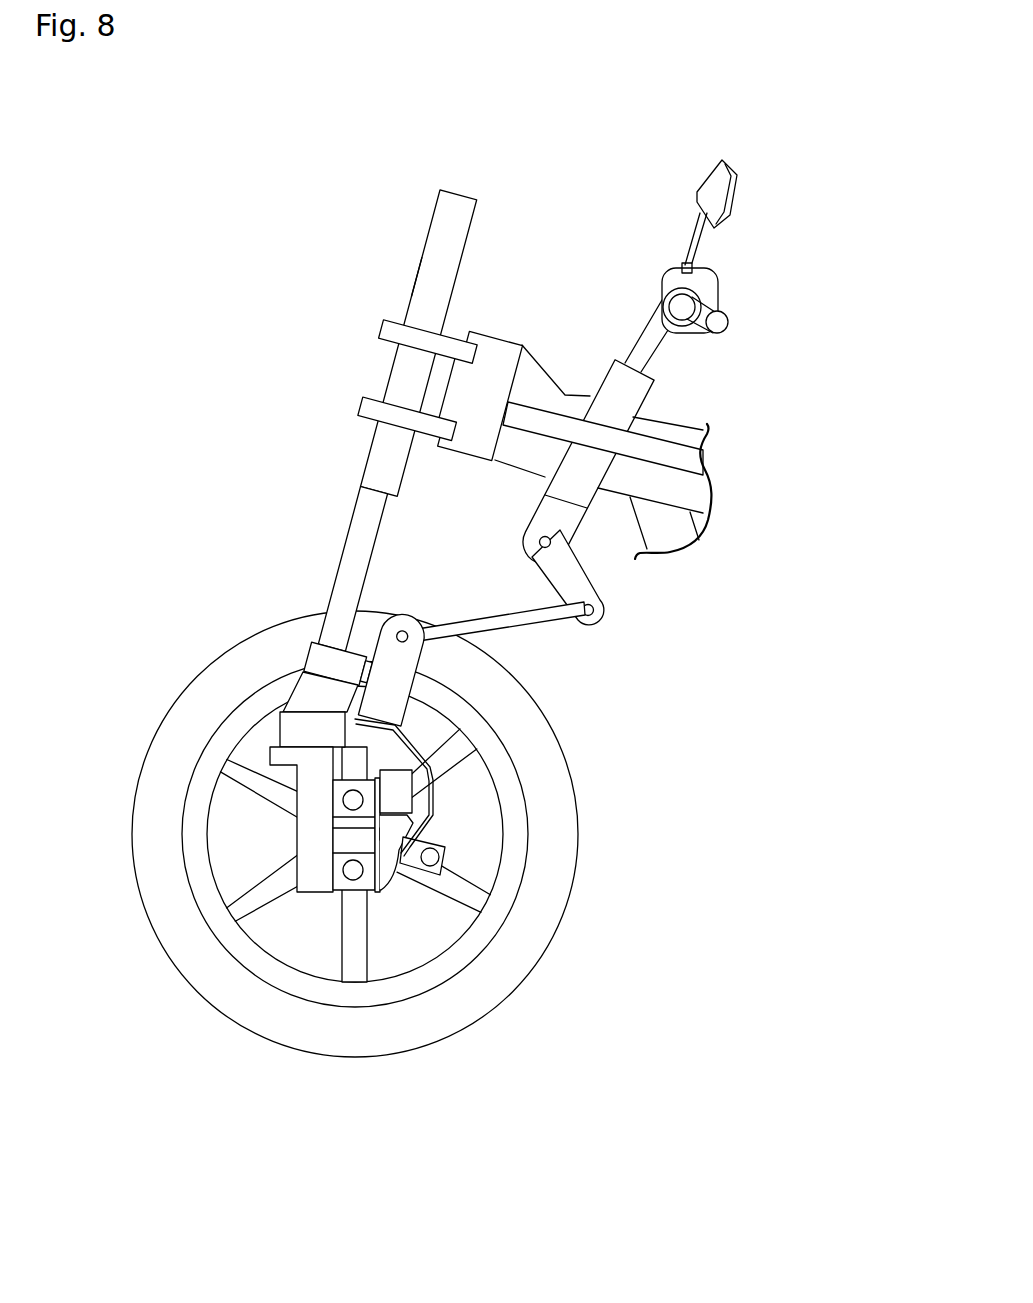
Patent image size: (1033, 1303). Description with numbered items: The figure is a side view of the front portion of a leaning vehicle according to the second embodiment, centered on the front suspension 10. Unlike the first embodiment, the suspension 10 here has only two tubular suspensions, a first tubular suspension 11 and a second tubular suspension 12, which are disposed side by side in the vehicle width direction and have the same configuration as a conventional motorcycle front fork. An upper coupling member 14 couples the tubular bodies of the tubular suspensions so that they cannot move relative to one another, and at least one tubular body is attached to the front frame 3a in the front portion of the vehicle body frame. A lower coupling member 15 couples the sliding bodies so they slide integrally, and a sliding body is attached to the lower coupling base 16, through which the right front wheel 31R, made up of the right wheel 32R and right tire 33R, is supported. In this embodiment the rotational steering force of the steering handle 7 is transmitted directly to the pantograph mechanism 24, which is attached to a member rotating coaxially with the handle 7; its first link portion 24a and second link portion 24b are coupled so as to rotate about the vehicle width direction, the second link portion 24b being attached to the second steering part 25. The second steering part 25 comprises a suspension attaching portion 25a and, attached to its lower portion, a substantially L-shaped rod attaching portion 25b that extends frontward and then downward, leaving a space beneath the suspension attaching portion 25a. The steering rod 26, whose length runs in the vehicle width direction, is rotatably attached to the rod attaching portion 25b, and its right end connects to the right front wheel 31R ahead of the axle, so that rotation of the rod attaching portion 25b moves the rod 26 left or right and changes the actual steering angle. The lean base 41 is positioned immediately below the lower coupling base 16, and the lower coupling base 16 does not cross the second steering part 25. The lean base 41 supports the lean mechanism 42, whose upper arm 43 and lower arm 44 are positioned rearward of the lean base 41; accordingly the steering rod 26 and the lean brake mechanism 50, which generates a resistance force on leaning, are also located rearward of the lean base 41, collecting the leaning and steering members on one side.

The front suspension 10 is at (370, 147).
The steering handle 7 is at (636, 372).
The front frame 3a is at (538, 382).
The first tubular suspension 11 is at (440, 218).
The second tubular suspension 12 is at (420, 277).
The upper coupling member 14 is at (388, 331).
The lower coupling member 15 is at (308, 653).
The lower coupling base 16 is at (296, 693).
The pantograph mechanism 24 is at (623, 521).
The first link portion 24a is at (578, 580).
The second link portion 24b is at (557, 618).
The second steering part 25 is at (564, 732).
The suspension attaching portion 25a is at (408, 655).
The rod attaching portion 25b is at (423, 750).
The steering rod 26 is at (442, 857).
The right front wheel 31R is at (355, 907).
The right wheel 32R is at (305, 1010).
The right tire 33R is at (400, 1040).
The lean base 41 is at (307, 832).
The lean mechanism 42 is at (395, 900).
The upper arm 43 is at (343, 798).
The lower arm 44 is at (356, 876).
The lean brake mechanism 50 is at (402, 794).